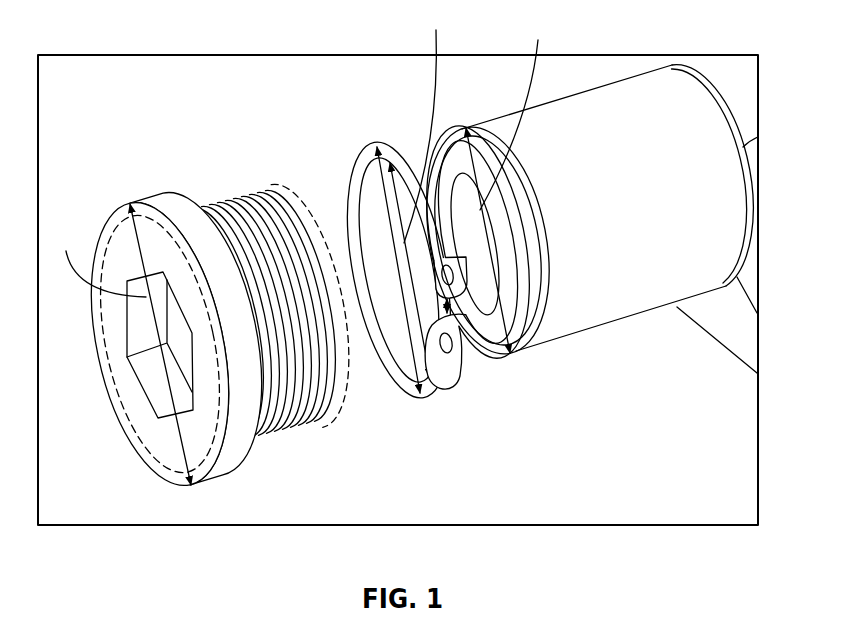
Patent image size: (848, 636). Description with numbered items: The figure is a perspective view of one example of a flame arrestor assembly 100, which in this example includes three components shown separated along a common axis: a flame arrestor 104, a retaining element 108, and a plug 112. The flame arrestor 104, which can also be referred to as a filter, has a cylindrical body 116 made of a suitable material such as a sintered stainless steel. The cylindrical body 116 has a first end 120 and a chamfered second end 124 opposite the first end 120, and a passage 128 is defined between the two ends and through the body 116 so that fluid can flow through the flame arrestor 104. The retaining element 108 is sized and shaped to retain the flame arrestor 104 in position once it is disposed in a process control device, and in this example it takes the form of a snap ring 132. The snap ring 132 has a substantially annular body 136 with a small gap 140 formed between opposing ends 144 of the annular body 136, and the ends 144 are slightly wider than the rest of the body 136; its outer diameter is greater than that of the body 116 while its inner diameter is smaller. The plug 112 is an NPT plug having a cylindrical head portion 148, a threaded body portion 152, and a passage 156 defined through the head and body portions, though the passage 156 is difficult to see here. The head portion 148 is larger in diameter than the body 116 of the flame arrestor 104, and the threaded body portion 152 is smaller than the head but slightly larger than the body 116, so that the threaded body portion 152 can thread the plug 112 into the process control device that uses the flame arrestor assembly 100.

The flame arrestor assembly 100 is at (587, 413).
The flame arrestor 104 is at (650, 318).
The retaining element 108 is at (389, 207).
The plug 112 is at (199, 176).
The cylindrical body 116 is at (713, 229).
The first end 120 is at (731, 108).
The chamfered second end 124 is at (467, 125).
The passage 128 is at (484, 296).
The snap ring 132 is at (356, 137).
The annular body 136 is at (347, 196).
The gap 140 is at (468, 342).
The ends 144 is at (444, 297).
The cylindrical head portion 148 is at (168, 442).
The threaded body portion 152 is at (306, 218).
The passage 156 is at (167, 370).